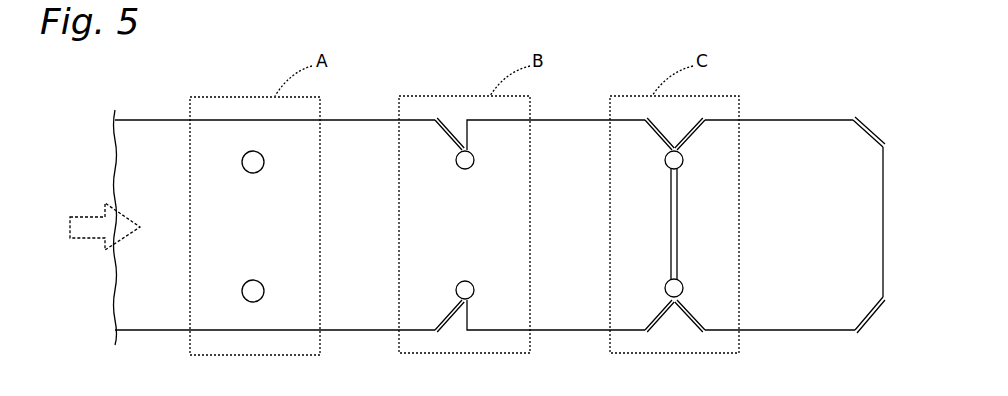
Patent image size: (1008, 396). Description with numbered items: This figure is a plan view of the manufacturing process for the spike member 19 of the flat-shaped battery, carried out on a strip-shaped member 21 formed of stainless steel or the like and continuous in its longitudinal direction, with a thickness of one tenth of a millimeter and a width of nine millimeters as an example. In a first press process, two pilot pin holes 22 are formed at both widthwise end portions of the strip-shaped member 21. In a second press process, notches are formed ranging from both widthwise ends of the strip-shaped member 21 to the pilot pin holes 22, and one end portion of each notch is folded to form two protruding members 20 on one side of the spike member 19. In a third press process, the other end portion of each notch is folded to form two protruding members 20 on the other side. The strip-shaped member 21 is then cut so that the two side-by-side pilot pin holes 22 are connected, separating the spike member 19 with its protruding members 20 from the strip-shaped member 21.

The spike member 19 is at (793, 305).
The protruding members 20 is at (448, 140).
The strip-shaped member 21 is at (157, 333).
The pilot pin holes 22 is at (253, 174).